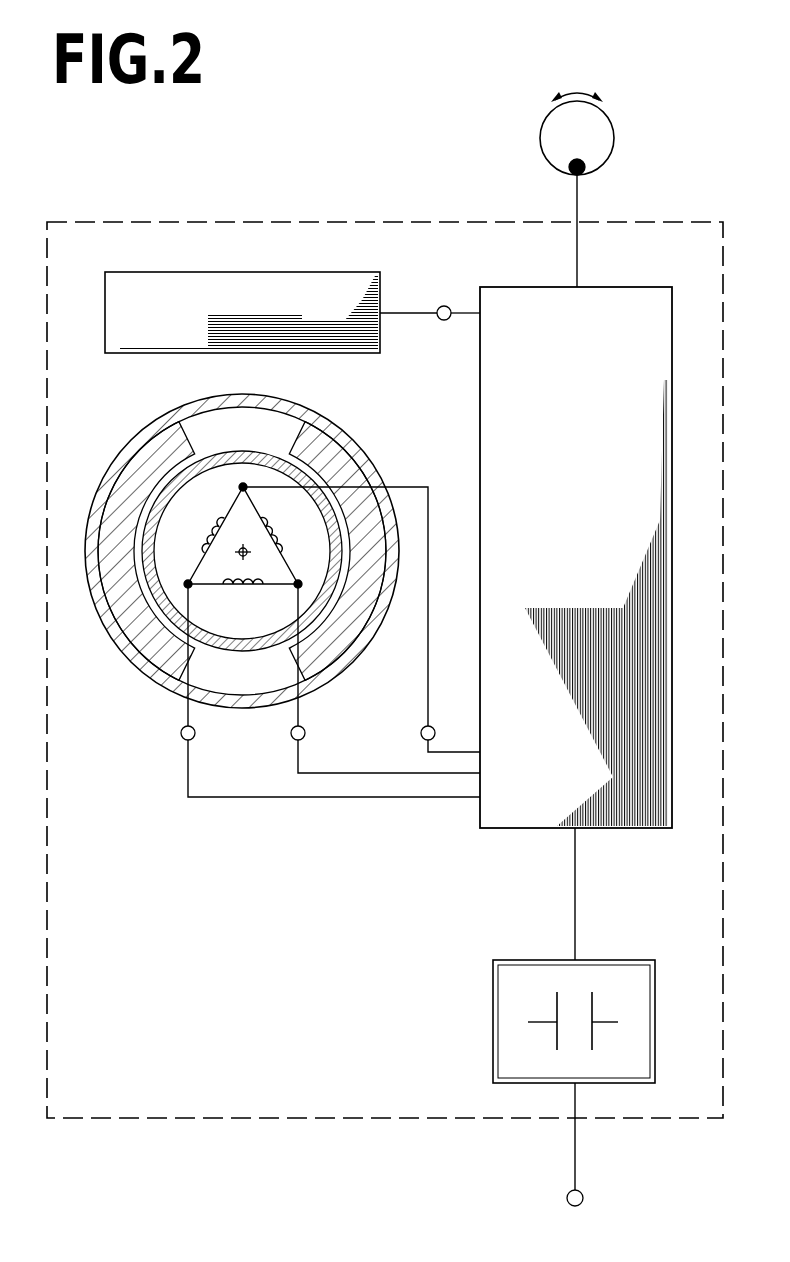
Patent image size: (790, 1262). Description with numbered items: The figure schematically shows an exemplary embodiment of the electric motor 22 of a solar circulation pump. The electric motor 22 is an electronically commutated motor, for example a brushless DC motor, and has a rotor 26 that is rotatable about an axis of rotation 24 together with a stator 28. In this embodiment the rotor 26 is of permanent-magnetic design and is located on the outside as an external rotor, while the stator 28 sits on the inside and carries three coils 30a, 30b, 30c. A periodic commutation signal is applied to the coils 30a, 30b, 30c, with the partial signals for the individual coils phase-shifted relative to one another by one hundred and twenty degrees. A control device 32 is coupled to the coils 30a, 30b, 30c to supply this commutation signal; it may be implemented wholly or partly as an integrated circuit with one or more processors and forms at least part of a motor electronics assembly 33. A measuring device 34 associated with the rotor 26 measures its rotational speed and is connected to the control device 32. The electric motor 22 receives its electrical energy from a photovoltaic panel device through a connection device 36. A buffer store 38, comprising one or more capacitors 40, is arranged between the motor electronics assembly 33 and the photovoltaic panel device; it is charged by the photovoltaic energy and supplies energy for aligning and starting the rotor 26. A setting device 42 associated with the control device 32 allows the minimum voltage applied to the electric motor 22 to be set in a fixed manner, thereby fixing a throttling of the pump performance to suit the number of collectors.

The electric motor 22 is at (244, 1118).
The axis of rotation 24 is at (250, 558).
The rotor 26 is at (148, 433).
The stator 28 is at (270, 455).
The coil 30a is at (243, 585).
The coil 30b is at (274, 546).
The coil 30c is at (216, 546).
The control device 32 is at (634, 820).
The motor electronics assembly 33 is at (473, 850).
The measuring device 34 is at (136, 281).
The connection device 36 is at (567, 1198).
The buffer store 38 is at (508, 1053).
The capacitor 40 is at (556, 1006).
The setting device 42 is at (551, 138).